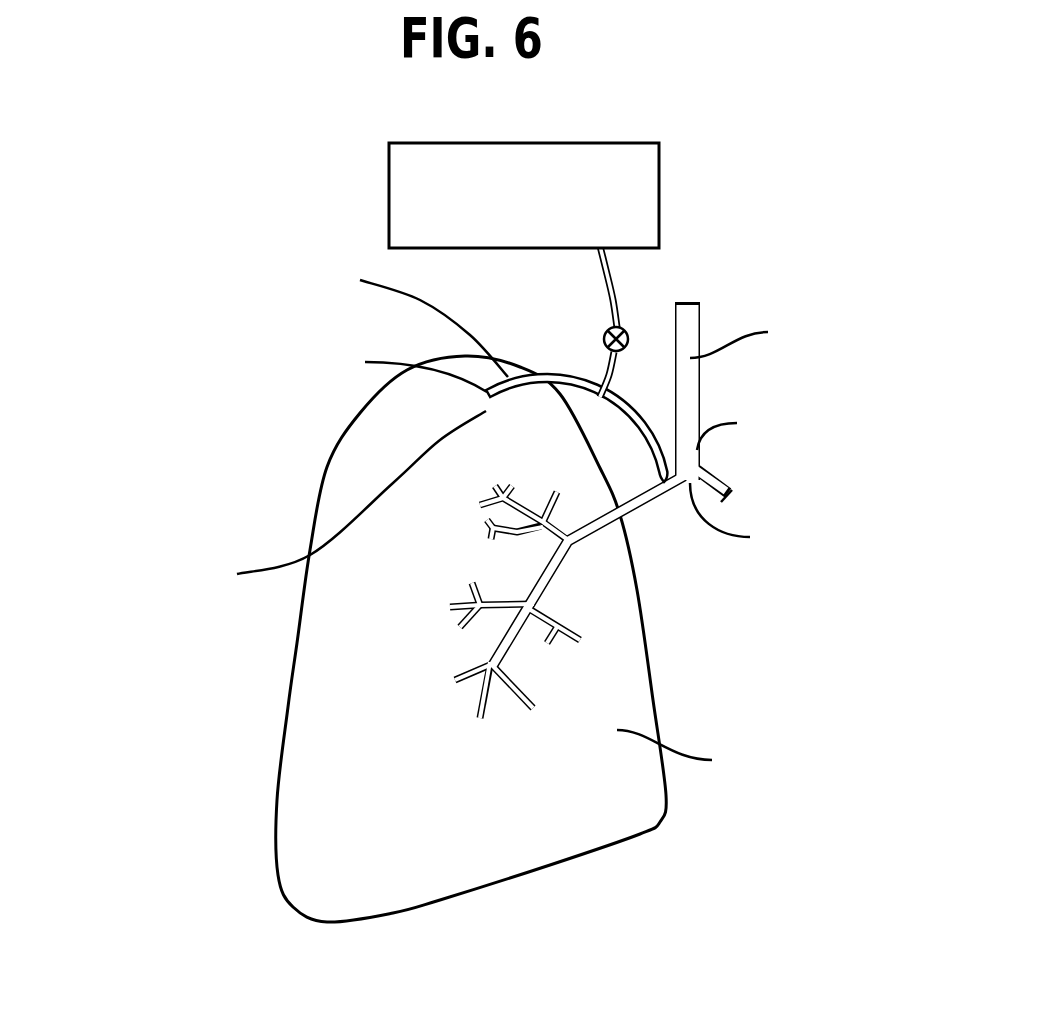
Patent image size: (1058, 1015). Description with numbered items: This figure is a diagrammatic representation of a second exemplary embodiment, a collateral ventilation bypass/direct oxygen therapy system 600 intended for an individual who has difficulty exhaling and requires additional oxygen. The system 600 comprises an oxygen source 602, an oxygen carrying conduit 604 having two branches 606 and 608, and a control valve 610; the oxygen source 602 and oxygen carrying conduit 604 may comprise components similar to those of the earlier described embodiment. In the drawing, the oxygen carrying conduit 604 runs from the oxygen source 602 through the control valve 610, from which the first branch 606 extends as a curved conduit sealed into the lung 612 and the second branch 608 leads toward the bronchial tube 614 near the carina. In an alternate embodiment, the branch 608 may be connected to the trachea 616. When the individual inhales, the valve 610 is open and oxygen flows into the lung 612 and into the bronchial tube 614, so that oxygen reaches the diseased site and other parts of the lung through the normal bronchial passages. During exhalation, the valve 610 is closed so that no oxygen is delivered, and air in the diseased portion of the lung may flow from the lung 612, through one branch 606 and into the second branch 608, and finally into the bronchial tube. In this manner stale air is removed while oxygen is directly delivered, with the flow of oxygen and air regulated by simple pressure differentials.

The collateral ventilation bypass/direct oxygen therapy system 600 is at (302, 190).
The oxygen source 602 is at (660, 195).
The oxygen carrying conduit 604 is at (609, 303).
The branch 606 is at (572, 378).
The branch 608 is at (636, 372).
The control valve 610 is at (628, 328).
The lung 612 is at (283, 707).
The bronchial tube 614 is at (647, 510).
The trachea 616 is at (697, 510).